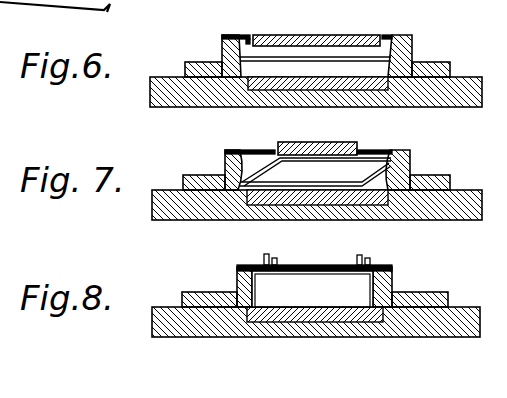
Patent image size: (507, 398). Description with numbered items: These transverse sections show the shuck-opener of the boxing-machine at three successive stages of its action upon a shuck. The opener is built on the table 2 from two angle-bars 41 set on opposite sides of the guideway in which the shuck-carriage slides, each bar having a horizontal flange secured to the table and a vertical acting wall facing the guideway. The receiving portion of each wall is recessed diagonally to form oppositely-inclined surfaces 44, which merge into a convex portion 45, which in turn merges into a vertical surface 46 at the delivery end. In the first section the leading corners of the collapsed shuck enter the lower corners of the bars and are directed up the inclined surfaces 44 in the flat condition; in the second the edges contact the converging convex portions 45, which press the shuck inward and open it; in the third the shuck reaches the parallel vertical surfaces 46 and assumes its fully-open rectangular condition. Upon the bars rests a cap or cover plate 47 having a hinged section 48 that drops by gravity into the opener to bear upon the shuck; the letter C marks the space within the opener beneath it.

In FIG. 6, the table 2 is at (448, 95).
In FIG. 7, the table 2 is at (468, 215).
In FIG. 8, the table 2 is at (438, 323).
In FIG. 6, the angle-bars 41 is at (222, 53).
In FIG. 7, the angle-bars 41 is at (225, 168).
In FIG. 8, the angle-bars 41 is at (205, 292).
In FIG. 6, the oppositely-inclined surfaces 44 is at (221, 44).
In FIG. 7, the convex portion 45 is at (225, 165).
In FIG. 8, the vertical surface 46 is at (254, 285).
In FIG. 6, the cap or cover plate 47 is at (391, 36).
In FIG. 7, the cap or cover plate 47 is at (386, 150).
In FIG. 8, the cap or cover plate 47 is at (380, 267).
In FIG. 6, the hinged section 48 is at (320, 35).
In FIG. 7, the hinged section 48 is at (302, 142).
In FIG. 8, the hinged section 48 is at (301, 265).
In FIG. 6, the chamber cavity C is at (321, 78).
In FIG. 7, the chamber cavity C is at (336, 196).
In FIG. 8, the chamber cavity C is at (336, 320).